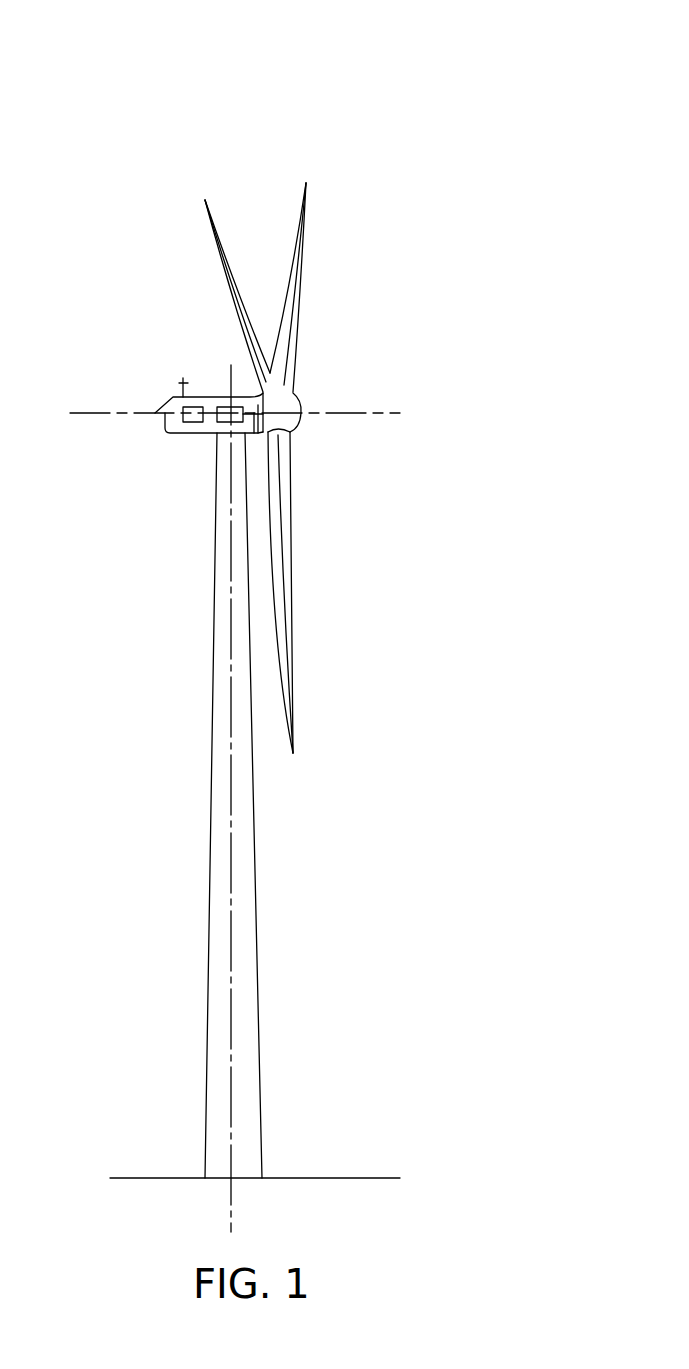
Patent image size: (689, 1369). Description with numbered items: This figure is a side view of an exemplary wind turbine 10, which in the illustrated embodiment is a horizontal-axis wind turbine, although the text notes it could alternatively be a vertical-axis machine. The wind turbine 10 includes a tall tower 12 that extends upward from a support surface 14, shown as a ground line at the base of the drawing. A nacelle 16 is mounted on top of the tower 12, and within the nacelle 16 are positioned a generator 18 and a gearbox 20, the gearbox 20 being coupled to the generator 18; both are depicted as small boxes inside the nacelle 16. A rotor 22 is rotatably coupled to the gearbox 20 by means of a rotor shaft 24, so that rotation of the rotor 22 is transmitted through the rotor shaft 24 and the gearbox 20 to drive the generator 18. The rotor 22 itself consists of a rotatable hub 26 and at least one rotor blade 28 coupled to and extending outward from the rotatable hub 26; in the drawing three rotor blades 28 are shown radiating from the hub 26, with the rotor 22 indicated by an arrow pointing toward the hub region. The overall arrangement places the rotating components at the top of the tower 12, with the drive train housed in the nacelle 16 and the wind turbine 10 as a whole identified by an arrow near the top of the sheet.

The wind turbine 10 is at (470, 77).
The tower 12 is at (210, 918).
The support surface 14 is at (157, 1178).
The nacelle 16 is at (175, 433).
The generator 18 is at (183, 410).
The gearbox 20 is at (218, 405).
The rotor 22 is at (272, 468).
The rotor shaft 24 is at (252, 415).
The rotatable hub 26 is at (301, 420).
The rotor blade 28 is at (222, 258).